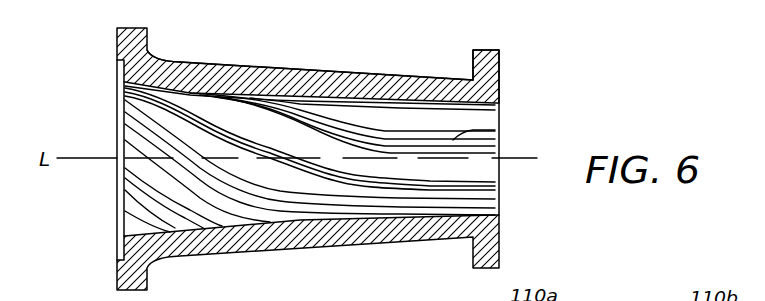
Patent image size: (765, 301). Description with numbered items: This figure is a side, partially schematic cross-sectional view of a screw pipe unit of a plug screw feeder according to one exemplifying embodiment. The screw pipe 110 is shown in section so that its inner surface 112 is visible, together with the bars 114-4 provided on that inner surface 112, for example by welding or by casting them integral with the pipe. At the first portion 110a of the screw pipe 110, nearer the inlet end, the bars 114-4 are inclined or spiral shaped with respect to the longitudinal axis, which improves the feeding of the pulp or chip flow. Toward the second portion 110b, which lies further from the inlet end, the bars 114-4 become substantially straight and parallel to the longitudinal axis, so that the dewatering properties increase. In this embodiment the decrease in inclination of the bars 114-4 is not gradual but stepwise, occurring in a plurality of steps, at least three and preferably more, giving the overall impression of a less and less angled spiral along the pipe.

The screw pipe 110 is at (330, 38).
The first portion of the screw pipe unit 110a is at (200, 62).
The second portion of the screw pipe unit 110b is at (422, 68).
The inner surface of the screw pipe 112 is at (160, 117).
The bars 114-4 is at (185, 170).